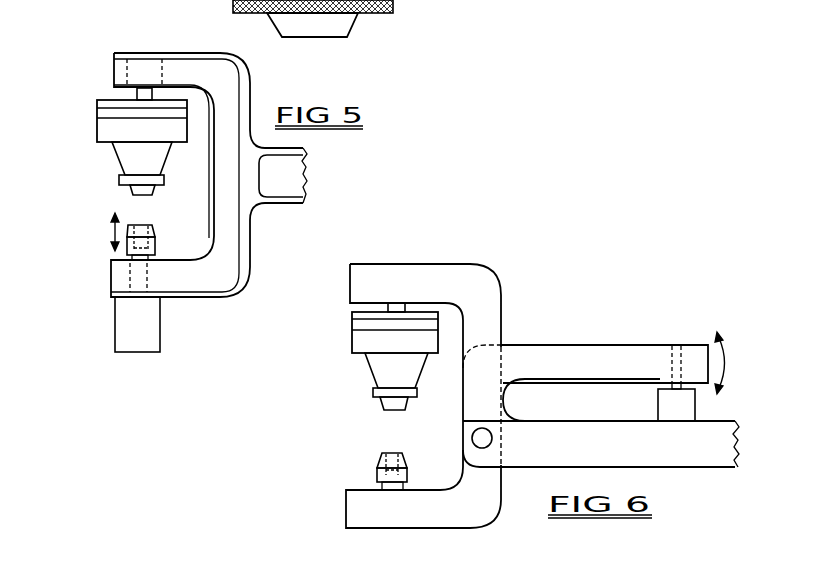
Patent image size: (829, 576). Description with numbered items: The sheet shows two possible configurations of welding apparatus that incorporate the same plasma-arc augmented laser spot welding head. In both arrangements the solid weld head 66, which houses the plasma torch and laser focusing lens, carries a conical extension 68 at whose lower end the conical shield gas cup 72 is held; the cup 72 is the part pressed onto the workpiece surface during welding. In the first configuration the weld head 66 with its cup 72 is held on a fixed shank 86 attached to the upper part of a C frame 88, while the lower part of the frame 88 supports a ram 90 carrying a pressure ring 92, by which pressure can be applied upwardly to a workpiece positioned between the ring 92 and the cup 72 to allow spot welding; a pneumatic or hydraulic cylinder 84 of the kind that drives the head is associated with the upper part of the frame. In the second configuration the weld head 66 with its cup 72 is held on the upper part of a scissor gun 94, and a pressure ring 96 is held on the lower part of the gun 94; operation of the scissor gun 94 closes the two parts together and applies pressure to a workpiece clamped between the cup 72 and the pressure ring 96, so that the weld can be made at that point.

In FIG. 5, the weld head 66 is at (112, 131).
In FIG. 6, the weld head 66 is at (356, 340).
In FIG. 5, the conical extension 68 is at (127, 163).
In FIG. 6, the conical extension 68 is at (377, 377).
In FIG. 5, the shield gas cup 72 is at (156, 191).
In FIG. 6, the shield gas cup 72 is at (392, 404).
In FIG. 5, the pneumatic or hydraulic cylinder 84 is at (146, 70).
In FIG. 5, the fixed shank 86 is at (137, 97).
In FIG. 5, the C frame 88 is at (232, 86).
In FIG. 5, the ram 90 is at (137, 279).
In FIG. 5, the pressure ring 92 is at (153, 238).
In FIG. 6, the scissor gun 94 is at (531, 309).
In FIG. 6, the pressure ring 96 is at (385, 462).